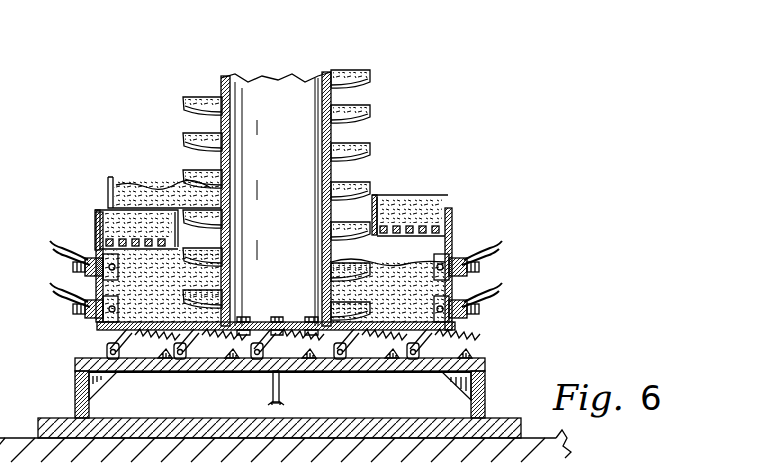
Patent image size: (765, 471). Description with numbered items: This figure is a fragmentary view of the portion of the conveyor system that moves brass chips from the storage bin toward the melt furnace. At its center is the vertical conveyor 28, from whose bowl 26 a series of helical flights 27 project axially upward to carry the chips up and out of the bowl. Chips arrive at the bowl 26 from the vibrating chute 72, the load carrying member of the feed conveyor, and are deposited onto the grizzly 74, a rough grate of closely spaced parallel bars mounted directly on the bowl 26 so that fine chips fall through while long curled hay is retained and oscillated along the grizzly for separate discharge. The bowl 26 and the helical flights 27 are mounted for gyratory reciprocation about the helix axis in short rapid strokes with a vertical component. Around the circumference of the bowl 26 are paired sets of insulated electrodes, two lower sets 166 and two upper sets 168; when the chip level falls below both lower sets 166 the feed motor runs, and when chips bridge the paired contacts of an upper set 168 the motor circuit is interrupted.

The bowl 26 is at (466, 330).
The helical flights 27 is at (352, 106).
The vertical conveyor 28 is at (292, 80).
The chute 72 is at (118, 184).
The grizzly 74 is at (118, 238).
The lower sets of electrodes 166 is at (103, 332).
The upper sets of electrodes 168 is at (95, 262).